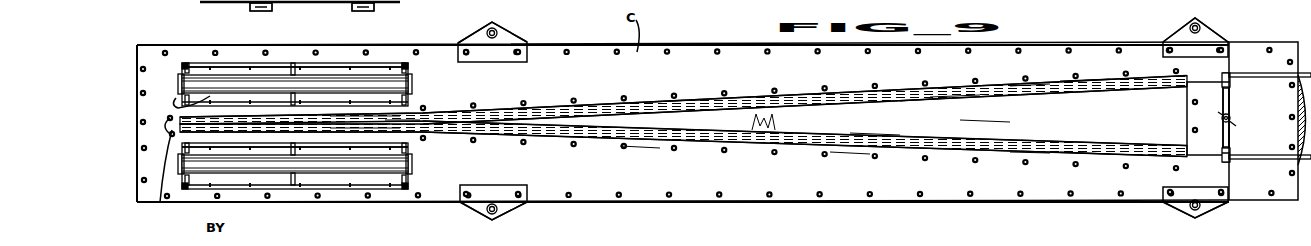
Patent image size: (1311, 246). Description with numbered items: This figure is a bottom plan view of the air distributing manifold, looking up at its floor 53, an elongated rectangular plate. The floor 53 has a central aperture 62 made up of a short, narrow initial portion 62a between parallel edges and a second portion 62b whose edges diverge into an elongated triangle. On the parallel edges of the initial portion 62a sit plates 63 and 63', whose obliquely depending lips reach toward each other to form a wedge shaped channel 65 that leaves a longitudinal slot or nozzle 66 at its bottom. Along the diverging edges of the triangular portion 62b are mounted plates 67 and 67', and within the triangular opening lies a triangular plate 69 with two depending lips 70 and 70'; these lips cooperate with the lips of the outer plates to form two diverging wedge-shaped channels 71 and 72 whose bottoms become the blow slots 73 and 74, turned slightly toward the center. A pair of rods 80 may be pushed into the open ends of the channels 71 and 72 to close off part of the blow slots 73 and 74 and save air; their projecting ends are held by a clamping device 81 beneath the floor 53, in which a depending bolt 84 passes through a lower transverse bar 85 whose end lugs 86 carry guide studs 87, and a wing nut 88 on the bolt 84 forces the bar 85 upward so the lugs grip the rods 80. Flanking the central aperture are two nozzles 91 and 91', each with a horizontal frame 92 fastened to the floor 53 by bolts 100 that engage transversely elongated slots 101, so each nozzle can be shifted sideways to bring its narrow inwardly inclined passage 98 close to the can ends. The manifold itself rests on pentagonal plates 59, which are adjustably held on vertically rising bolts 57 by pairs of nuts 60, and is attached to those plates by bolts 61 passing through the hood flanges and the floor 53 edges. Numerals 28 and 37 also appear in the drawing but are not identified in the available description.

The floor 53 is at (1078, 50).
The nozzle 91 is at (295, 181).
The nozzle 91' is at (295, 63).
The transversely elongated slot 101 is at (290, 95).
The bolt 100 is at (185, 66).
The horizontal frame 92 is at (380, 70).
The inwardly inclined passage 98 is at (176, 102).
The longitudinal slot or nozzle 66 is at (180, 128).
The aperture 62 is at (706, 140).
The initial portion of aperture 62a is at (300, 134).
The second portion of aperture 62b is at (1075, 150).
The plate 63 is at (365, 177).
The plate 63' is at (365, 69).
The wedge shaped channel 65 is at (390, 127).
The diverging channel 72 is at (690, 92).
The diverging channel 71 is at (648, 155).
The plate 67 is at (850, 188).
The plate 67' is at (1030, 52).
The depending lip 70 is at (875, 122).
The depending lip 70' is at (925, 109).
The blow slot or nozzle 74 is at (950, 96).
The blow slot or nozzle 73 is at (1036, 150).
The triangular plate 69 is at (996, 125).
The pentagonal plate 59 is at (518, 42).
The nut 60 is at (490, 30).
The bolt 57 is at (508, 36).
The bolt 61 is at (516, 50).
The rod 80 is at (1262, 82).
The bolt 84 is at (1222, 117).
The guide stud 87 is at (1229, 78).
The end lug 86 is at (1222, 90).
The transverse bar 85 is at (1235, 100).
The wing nut 88 is at (1236, 120).
The clamping device 81 is at (1241, 139).
The clamp 28 is at (264, 12).
The support 37 is at (402, 0).